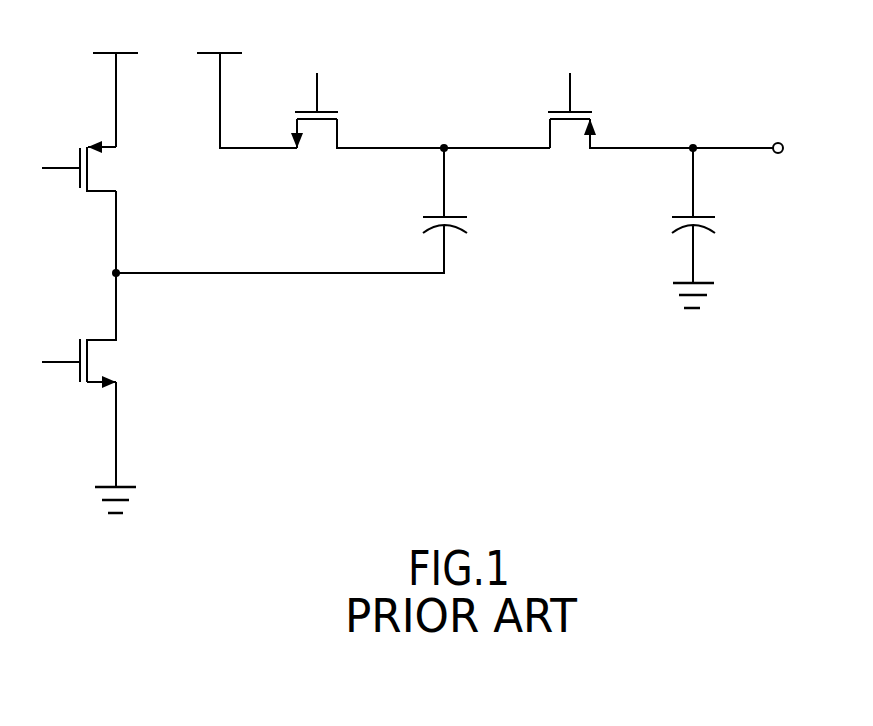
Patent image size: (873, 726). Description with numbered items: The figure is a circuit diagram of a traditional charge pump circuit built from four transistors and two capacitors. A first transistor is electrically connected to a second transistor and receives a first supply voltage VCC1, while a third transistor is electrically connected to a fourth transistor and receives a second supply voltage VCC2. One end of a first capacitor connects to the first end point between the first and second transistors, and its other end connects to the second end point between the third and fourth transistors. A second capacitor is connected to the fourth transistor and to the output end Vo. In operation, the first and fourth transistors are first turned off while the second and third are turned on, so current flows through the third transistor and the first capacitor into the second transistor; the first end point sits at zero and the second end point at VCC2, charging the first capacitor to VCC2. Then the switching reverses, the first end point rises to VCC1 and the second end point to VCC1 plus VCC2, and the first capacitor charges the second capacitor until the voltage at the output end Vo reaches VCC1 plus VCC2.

The first supply voltage VCC1 is at (114, 84).
The second supply voltage VCC2 is at (243, 84).
The output end Vo is at (756, 145).